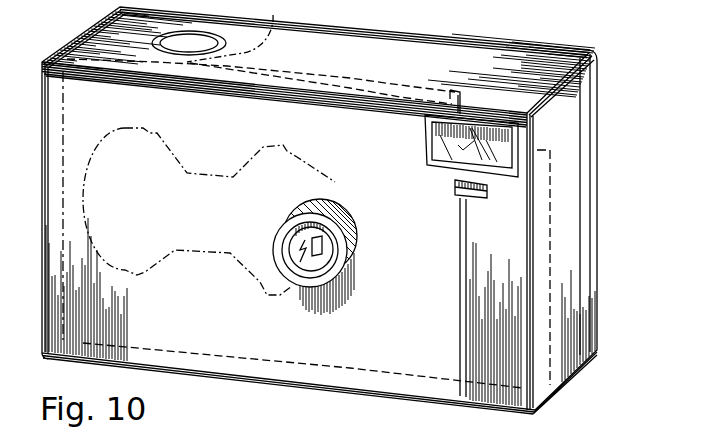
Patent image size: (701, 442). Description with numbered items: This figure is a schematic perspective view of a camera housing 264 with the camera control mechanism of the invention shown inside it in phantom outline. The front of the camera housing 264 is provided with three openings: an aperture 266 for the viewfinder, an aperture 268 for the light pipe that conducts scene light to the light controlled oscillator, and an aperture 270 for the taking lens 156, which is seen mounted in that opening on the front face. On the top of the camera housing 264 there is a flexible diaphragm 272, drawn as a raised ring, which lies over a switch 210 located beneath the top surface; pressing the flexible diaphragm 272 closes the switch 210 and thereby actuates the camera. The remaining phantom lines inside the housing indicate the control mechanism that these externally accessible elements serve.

The camera housing 264 is at (388, 67).
The flexible diaphragm 272 is at (200, 45).
The switch 210 is at (278, 17).
The aperture for the viewfinder 266 is at (510, 138).
The aperture for the light pipe 268 is at (488, 187).
The aperture for the taking lens 270 is at (345, 210).
The taking lens 156 is at (358, 228).